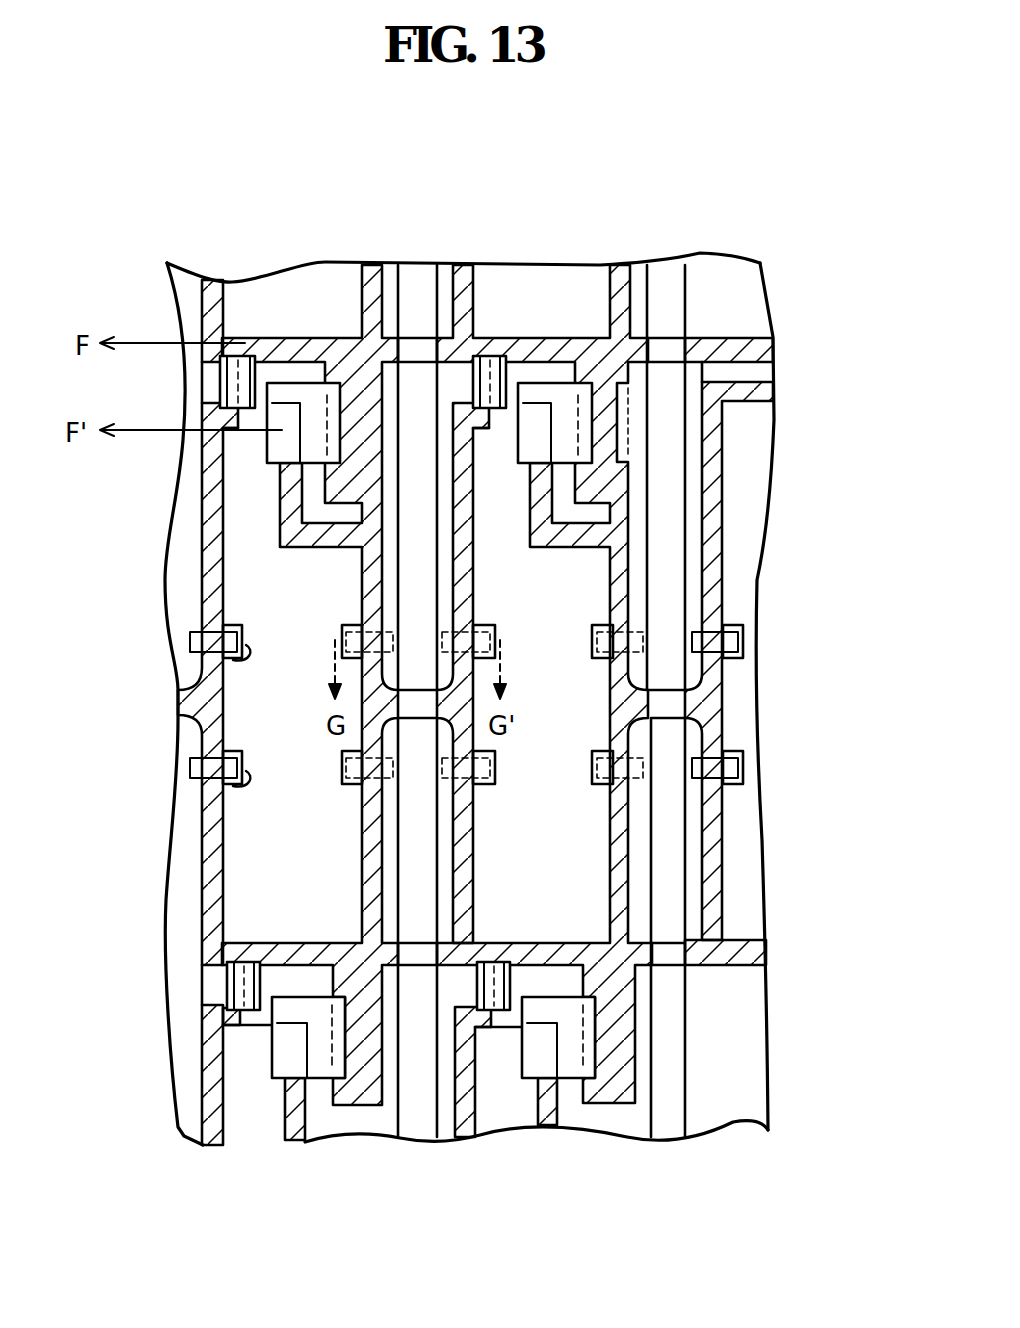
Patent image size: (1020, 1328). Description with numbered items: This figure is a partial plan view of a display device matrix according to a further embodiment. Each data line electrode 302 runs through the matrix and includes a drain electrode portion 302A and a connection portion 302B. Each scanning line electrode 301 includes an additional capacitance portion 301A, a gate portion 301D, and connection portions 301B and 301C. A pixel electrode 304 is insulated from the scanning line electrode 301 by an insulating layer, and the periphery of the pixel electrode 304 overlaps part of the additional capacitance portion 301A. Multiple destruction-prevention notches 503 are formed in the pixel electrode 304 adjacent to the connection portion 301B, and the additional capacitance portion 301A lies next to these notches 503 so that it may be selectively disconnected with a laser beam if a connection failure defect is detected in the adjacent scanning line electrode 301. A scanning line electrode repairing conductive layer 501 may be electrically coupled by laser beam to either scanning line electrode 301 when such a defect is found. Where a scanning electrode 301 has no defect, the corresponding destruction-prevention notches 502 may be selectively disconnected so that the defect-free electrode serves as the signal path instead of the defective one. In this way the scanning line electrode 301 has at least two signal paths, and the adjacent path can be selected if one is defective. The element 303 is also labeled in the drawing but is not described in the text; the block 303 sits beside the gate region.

The scanning line electrode 301 is at (730, 967).
The additional capacitance portion 301A is at (210, 848).
The connection portion 301B is at (690, 703).
The connection portion 301C is at (697, 943).
The gate portion 301D is at (357, 1093).
The data line electrode 302 is at (423, 290).
The drain electrode portion 302A is at (625, 448).
The connection portion 302B is at (668, 503).
The support block 303 is at (565, 417).
The pixel electrode 304 is at (235, 572).
The scanning line electrode repairing conductive layer 501 is at (238, 976).
The destruction-prevention notches 502 is at (190, 641).
The destruction-prevention notches 503 is at (232, 660).